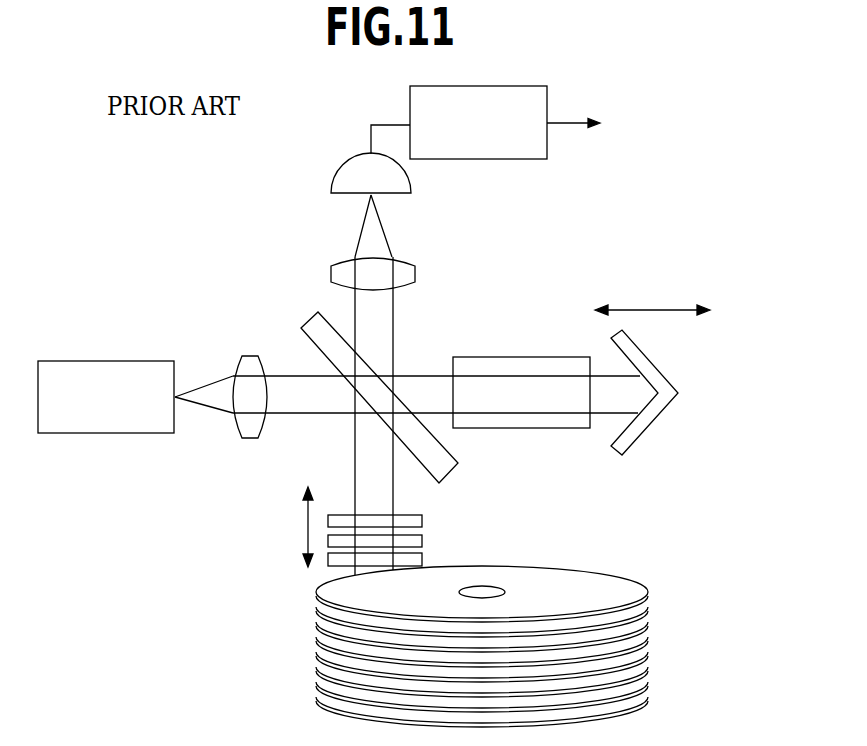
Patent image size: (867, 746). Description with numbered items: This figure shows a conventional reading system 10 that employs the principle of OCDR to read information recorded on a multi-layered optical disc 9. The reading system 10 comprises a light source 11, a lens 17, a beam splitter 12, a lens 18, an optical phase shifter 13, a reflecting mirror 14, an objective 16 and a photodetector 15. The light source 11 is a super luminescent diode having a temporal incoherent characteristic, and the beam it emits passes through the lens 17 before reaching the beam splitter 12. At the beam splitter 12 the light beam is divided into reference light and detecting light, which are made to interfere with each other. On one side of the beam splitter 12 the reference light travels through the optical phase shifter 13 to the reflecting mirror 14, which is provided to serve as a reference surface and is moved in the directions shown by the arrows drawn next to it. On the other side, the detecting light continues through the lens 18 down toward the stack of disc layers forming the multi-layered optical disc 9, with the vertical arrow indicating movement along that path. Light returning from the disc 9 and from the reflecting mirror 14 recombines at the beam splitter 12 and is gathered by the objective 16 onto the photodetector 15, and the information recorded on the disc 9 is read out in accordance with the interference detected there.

The multi-layered optical disc 9 is at (602, 572).
The reading system 10 is at (647, 290).
The light source 11 is at (109, 373).
The beam splitter 12 is at (370, 387).
The optical phase shifter 13 is at (548, 362).
The reflecting mirror 14 is at (657, 383).
The photodetector 15 is at (395, 177).
The objective 16 is at (402, 276).
The lens 17 is at (251, 362).
The lens 18 is at (418, 518).